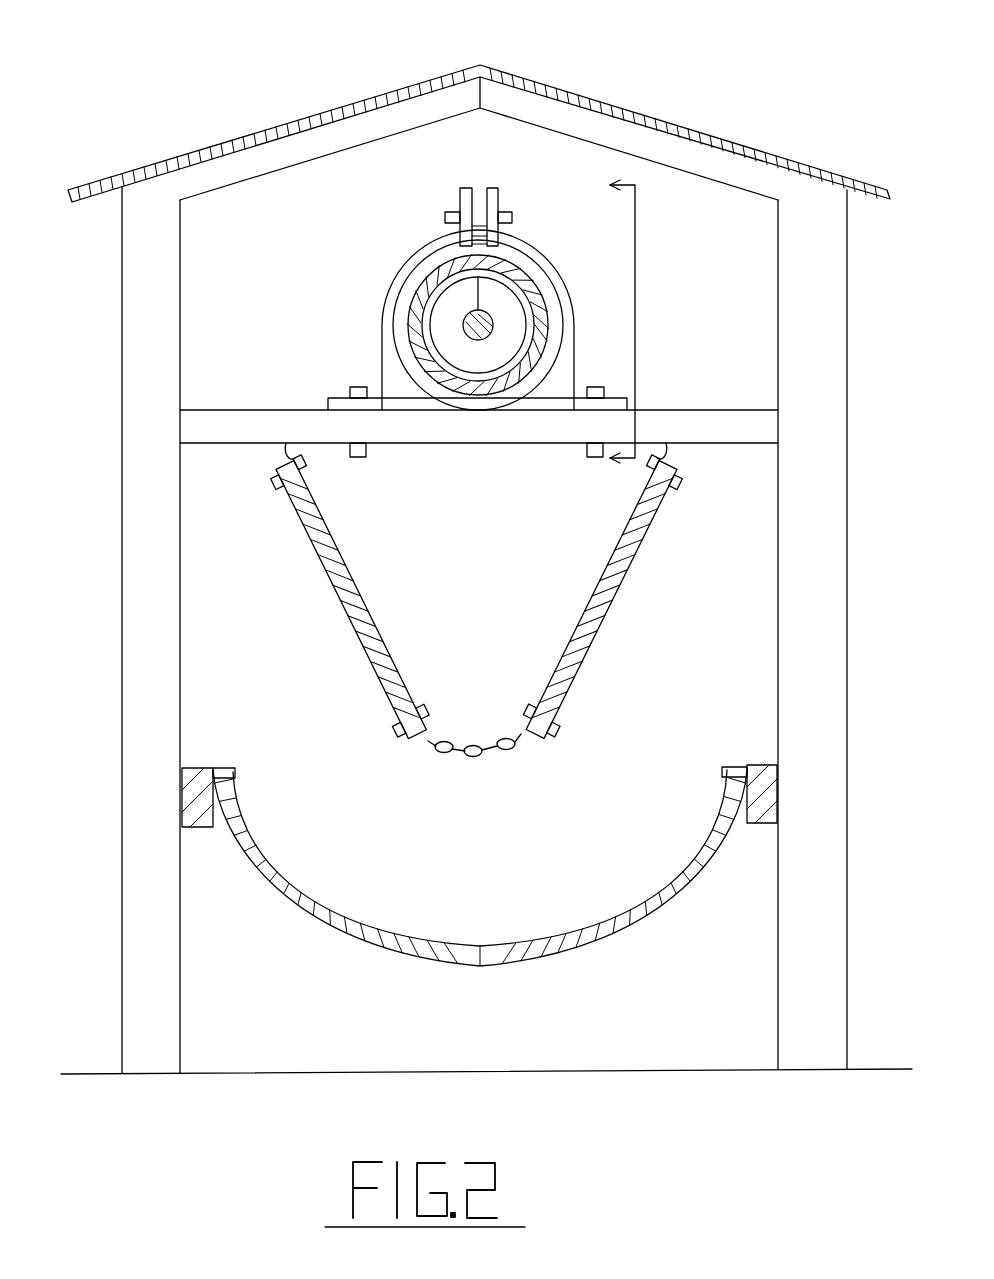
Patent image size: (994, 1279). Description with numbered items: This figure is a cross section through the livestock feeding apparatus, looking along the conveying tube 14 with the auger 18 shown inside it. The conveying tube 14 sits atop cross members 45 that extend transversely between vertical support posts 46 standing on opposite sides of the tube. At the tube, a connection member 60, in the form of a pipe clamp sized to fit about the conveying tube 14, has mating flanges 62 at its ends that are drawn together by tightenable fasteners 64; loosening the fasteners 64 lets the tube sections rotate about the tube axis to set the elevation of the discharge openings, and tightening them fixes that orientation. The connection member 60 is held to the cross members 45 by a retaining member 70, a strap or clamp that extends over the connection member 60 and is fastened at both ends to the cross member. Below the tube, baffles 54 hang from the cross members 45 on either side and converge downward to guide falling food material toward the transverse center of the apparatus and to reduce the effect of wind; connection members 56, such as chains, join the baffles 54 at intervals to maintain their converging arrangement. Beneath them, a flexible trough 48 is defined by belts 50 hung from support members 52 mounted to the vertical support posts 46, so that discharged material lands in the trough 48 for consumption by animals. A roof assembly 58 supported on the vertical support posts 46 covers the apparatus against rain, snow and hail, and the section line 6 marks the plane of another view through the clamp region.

The section line 6- 6 is at (624, 328).
The conveying tube 14 is at (540, 297).
The auger 18 is at (505, 332).
The cross members 45 is at (225, 438).
The vertical support posts 46 is at (155, 1006).
The flexible trough 48 is at (415, 921).
The belts 50 is at (543, 947).
The support members 52 is at (762, 787).
The baffles 54 is at (573, 660).
The connection members 56 is at (470, 740).
The roof assembly 58 is at (322, 116).
The connection member 60 is at (418, 273).
The mating flanges 62 is at (492, 200).
The tightenable fasteners 64 is at (452, 214).
The retaining members 70 is at (540, 262).